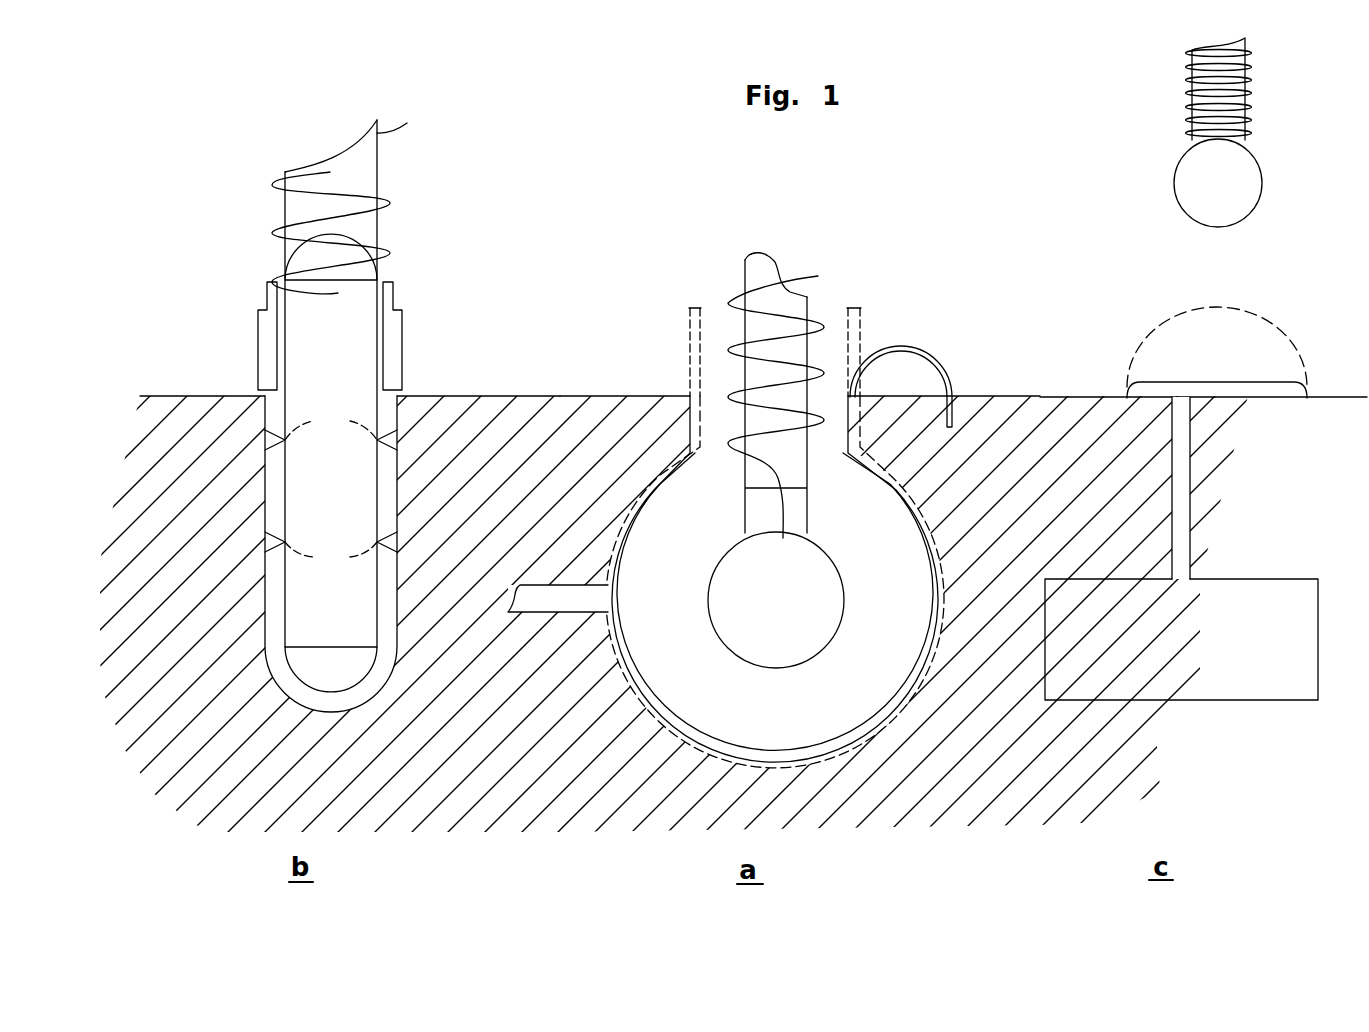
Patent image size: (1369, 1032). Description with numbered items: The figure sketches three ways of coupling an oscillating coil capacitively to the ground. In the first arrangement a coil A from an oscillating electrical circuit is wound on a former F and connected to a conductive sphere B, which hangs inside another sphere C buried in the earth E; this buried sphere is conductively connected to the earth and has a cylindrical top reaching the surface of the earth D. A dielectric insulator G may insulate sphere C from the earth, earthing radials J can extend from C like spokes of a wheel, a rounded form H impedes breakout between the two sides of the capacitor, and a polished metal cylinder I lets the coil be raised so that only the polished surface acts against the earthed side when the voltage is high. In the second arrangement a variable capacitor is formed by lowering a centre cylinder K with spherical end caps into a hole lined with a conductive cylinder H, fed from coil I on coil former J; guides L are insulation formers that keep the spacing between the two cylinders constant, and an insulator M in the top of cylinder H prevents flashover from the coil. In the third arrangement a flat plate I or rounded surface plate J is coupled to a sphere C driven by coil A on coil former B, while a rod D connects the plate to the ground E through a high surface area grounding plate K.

In FIG. 1a, the coil A is at (830, 348).
In FIG. 1c, the coil A is at (1245, 117).
In FIG. 1a, the sphere B is at (828, 590).
In FIG. 1c, the sphere B is at (1243, 60).
In FIG. 1a, the sphere C is at (900, 700).
In FIG. 1c, the sphere C is at (1263, 195).
In FIG. 1a, the surface of the earth D is at (1003, 415).
In FIG. 1c, the surface of the earth D is at (1172, 458).
In FIG. 1b, the earth E is at (458, 528).
In FIG. 1a, the earth E is at (1007, 490).
In FIG. 1c, the earth E is at (684, 618).
In FIG. 1a, the former F is at (750, 297).
In FIG. 1a, the dielectric insulator G is at (692, 348).
In FIG. 1b, the cylinder H is at (400, 327).
In FIG. 1a, the cylinder H is at (935, 357).
In FIG. 1b, the polished metal cylinder I is at (392, 206).
In FIG. 1a, the polished metal cylinder I is at (797, 513).
In FIG. 1c, the polished metal cylinder I is at (1300, 382).
In FIG. 1b, the earthing radials J is at (380, 165).
In FIG. 1a, the earthing radials J is at (577, 590).
In FIG. 1c, the earthing radials J is at (1270, 330).
In FIG. 1b, the centre cylinder K is at (383, 277).
In FIG. 1c, the centre cylinder K is at (1276, 594).
In FIG. 1b, the guides L is at (331, 488).
In FIG. 1b, the insulator M is at (273, 293).